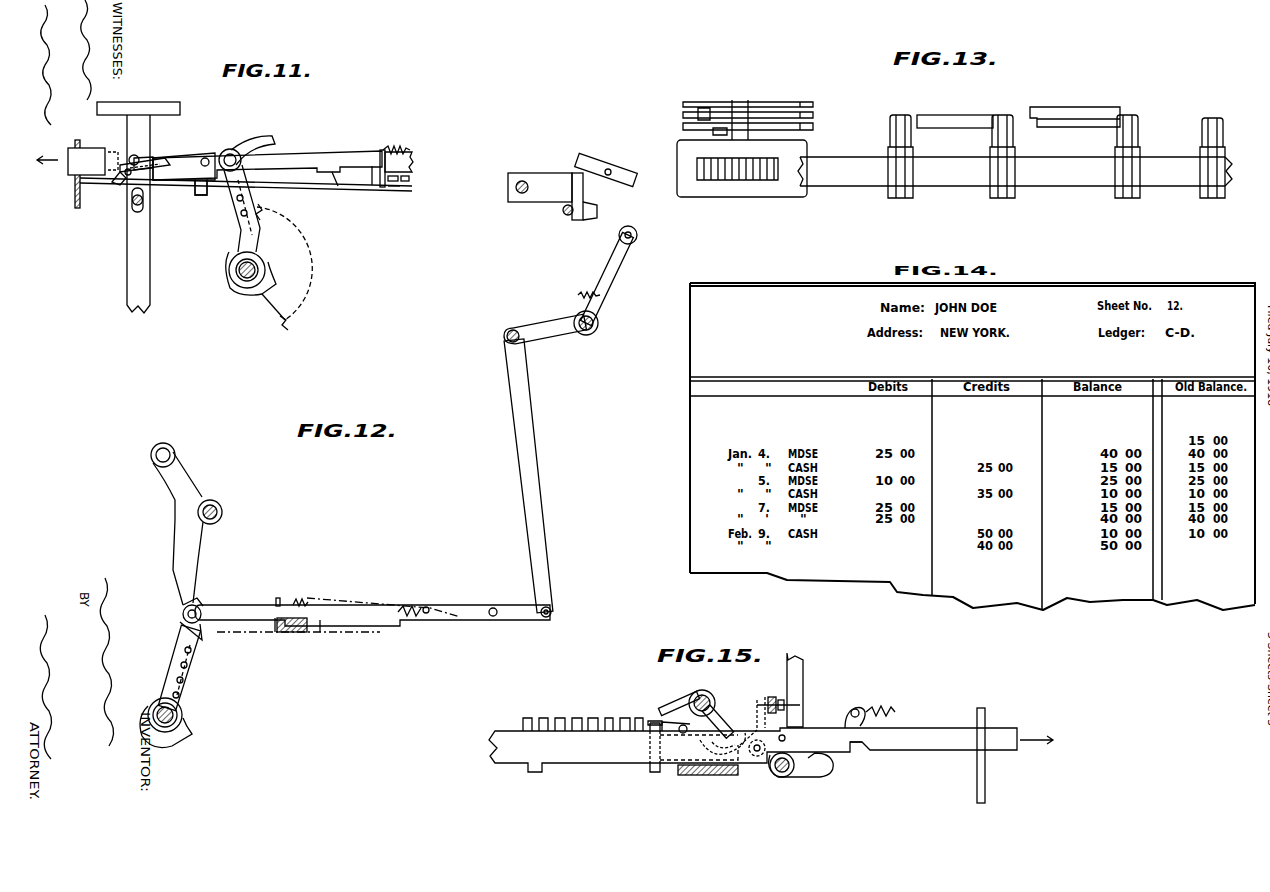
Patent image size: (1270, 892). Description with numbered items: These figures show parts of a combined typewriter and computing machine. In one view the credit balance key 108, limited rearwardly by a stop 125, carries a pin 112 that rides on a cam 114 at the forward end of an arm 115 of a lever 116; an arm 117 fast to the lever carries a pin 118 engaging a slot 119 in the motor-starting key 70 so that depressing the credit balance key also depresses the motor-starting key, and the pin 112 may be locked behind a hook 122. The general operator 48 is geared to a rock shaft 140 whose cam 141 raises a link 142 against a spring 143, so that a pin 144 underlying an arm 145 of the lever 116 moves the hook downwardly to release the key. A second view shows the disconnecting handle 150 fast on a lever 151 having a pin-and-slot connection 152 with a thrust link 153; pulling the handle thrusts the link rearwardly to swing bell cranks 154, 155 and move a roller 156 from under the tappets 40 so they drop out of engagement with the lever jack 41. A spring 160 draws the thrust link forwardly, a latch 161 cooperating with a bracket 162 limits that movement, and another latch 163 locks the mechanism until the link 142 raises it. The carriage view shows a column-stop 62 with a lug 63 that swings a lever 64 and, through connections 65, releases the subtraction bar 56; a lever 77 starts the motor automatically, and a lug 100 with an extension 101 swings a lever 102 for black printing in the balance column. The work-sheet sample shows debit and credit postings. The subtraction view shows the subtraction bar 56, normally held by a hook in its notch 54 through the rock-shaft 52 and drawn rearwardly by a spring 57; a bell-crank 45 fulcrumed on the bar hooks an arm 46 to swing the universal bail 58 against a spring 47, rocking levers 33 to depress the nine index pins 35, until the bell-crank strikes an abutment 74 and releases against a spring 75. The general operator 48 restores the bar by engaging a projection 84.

In FIG. 11, the motor-starting key 70 is at (167, 102).
In FIG. 11, the credit balance key 108 is at (68, 178).
In FIG. 11, the pin 112 is at (143, 157).
In FIG. 11, the cam 114 is at (123, 177).
In FIG. 11, the arm 115 is at (177, 157).
In FIG. 11, the lever 116 is at (187, 192).
In FIG. 11, the arm 117 is at (184, 174).
In FIG. 11, the pin 118 is at (135, 172).
In FIG. 11, the slot 119 is at (133, 155).
In FIG. 11, the hook 122 is at (152, 157).
In FIG. 11, the stop 125 is at (113, 162).
In FIG. 11, the rock shaft 140 is at (248, 286).
In FIG. 12, the rock shaft 140 is at (173, 737).
In FIG. 11, the cam 141 is at (268, 272).
In FIG. 12, the cam 141 is at (186, 721).
In FIG. 11, the link 142 is at (242, 172).
In FIG. 12, the link 142 is at (193, 677).
In FIG. 11, the spring 143 is at (235, 223).
In FIG. 12, the spring 143 is at (172, 668).
In FIG. 11, the pin 144 is at (231, 152).
In FIG. 12, the pin 144 is at (184, 621).
In FIG. 11, the arm 145 is at (262, 142).
In FIG. 12, the handle 150 is at (176, 455).
In FIG. 12, the lever 151 is at (175, 488).
In FIG. 12, the pin-and-slot connection 152 is at (194, 602).
In FIG. 11, the thrust link 153 is at (297, 157).
In FIG. 12, the thrust link 153 is at (244, 606).
In FIG. 12, the bell crank 154 is at (535, 467).
In FIG. 12, the bell crank 155 is at (623, 262).
In FIG. 12, the roller 156 is at (619, 238).
In FIG. 11, the spring 160 is at (400, 152).
In FIG. 12, the spring 160 is at (298, 596).
In FIG. 11, the latch 161 is at (377, 177).
In FIG. 12, the latch 161 is at (320, 625).
In FIG. 11, the bracket 162 is at (397, 187).
In FIG. 12, the bracket 162 is at (298, 637).
In FIG. 11, the latch 163 is at (337, 177).
In FIG. 12, the latch 163 is at (277, 627).
In FIG. 12, the tappet 40 is at (575, 173).
In FIG. 12, the lever jack 41 is at (600, 163).
In FIG. 13, the column-stop 62 is at (1008, 177).
In FIG. 13, the lug 63 is at (953, 119).
In FIG. 13, the lever 64 is at (685, 113).
In FIG. 13, the lever 77 is at (685, 126).
In FIG. 13, the lug 100 is at (1084, 123).
In FIG. 13, the extension 101 is at (1037, 110).
In FIG. 13, the lever 102 is at (708, 102).
In FIG. 15, the levers 33 is at (699, 748).
In FIG. 15, the index pins 35 is at (552, 720).
In FIG. 15, the bell-crank 45 is at (722, 756).
In FIG. 15, the arm 46 is at (713, 718).
In FIG. 15, the spring 47 is at (713, 696).
In FIG. 15, the general operator 48 is at (686, 785).
In FIG. 15, the rock-shaft 52 is at (782, 773).
In FIG. 15, the notch 54 is at (860, 748).
In FIG. 15, the subtraction bar 56 is at (991, 755).
In FIG. 15, the spring 57 is at (888, 710).
In FIG. 15, the universal bail 58 is at (663, 713).
In FIG. 15, the connections 65 is at (827, 780).
In FIG. 15, the abutment 74 is at (767, 702).
In FIG. 15, the spring 75 is at (748, 760).
In FIG. 15, the projection 84 is at (531, 768).